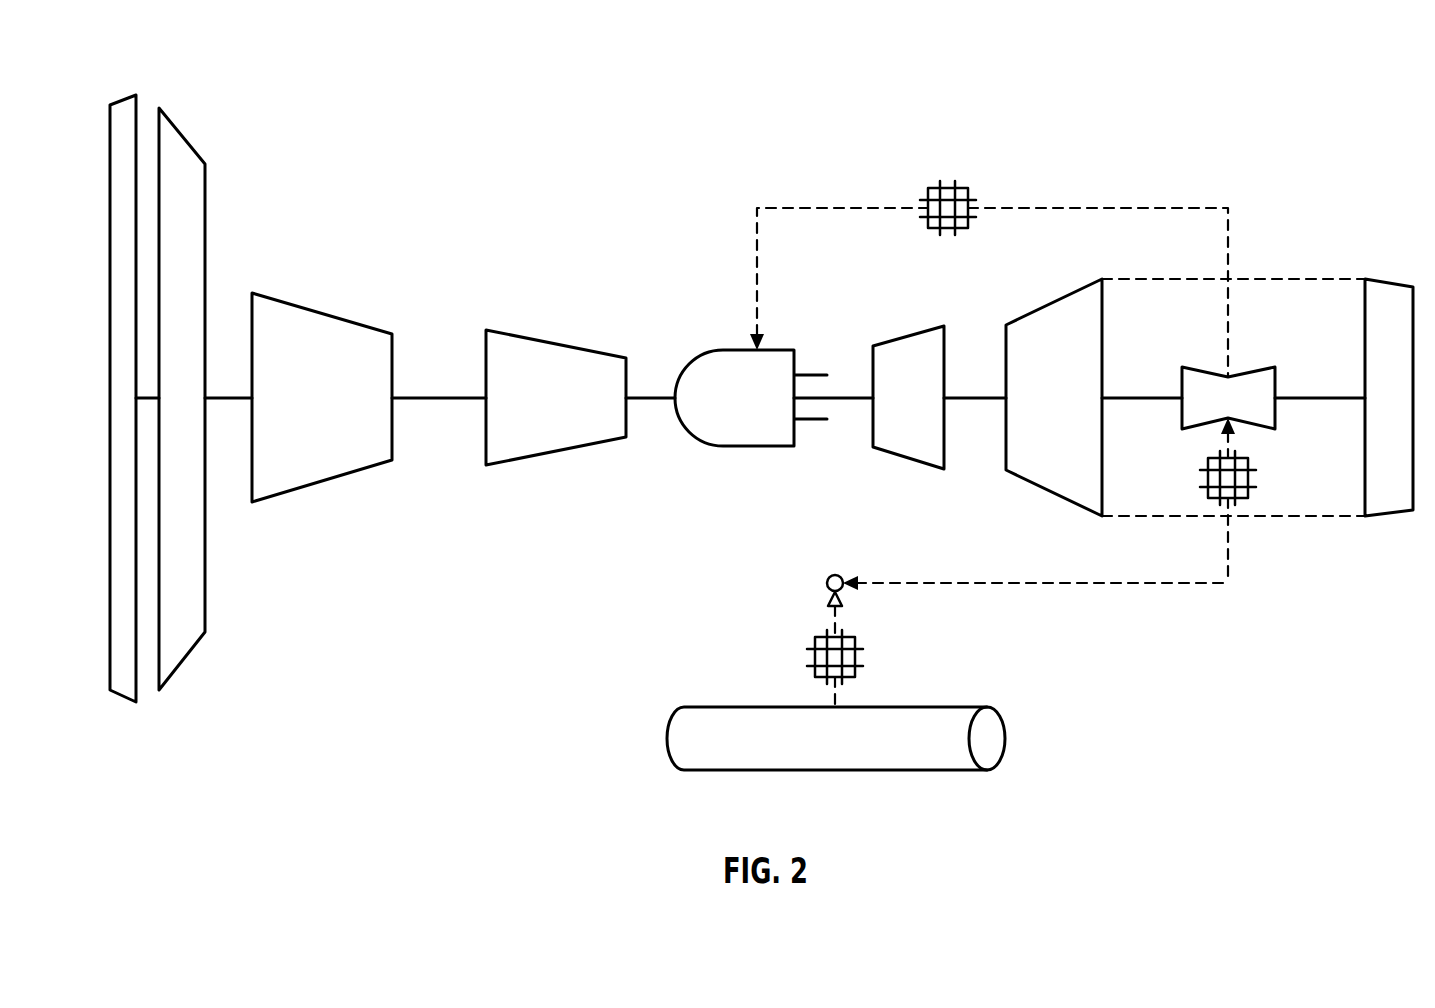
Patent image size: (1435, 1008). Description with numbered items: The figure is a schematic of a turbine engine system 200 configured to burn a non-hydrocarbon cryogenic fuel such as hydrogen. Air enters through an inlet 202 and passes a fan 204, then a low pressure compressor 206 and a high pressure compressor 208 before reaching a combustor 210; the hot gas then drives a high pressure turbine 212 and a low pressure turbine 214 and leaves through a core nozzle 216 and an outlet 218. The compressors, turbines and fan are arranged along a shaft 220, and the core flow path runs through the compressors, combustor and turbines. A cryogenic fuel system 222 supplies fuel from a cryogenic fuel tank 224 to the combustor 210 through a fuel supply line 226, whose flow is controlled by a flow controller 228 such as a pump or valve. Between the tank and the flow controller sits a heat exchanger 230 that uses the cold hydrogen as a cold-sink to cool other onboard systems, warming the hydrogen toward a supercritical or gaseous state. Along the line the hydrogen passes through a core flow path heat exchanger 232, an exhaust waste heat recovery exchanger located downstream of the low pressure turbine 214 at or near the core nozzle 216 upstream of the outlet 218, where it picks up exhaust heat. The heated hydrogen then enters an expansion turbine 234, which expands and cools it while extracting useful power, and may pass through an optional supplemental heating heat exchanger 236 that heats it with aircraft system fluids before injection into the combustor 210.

The turbine engine system 200 is at (1308, 93).
The inlet 202 is at (127, 103).
The fan 204 is at (183, 143).
The low pressure compressor 206 is at (306, 320).
The high pressure compressor 208 is at (542, 358).
The combustor 210 is at (773, 357).
The high pressure turbine 212 is at (914, 342).
The low pressure turbine 214 is at (1062, 305).
The core nozzle 216 is at (1318, 517).
The outlet 218 is at (1383, 292).
The shaft 220 is at (415, 395).
The cryogenic fuel system 222 is at (1017, 635).
The cryogenic fuel tank 224 is at (923, 755).
The fuel supply line 226 is at (957, 583).
The flow controller 228 is at (827, 583).
The heat exchanger 230 is at (857, 657).
The core flow path heat exchanger 232 is at (1238, 498).
The expansion turbine 234 is at (1247, 380).
The supplemental heating heat exchanger 236 is at (948, 188).